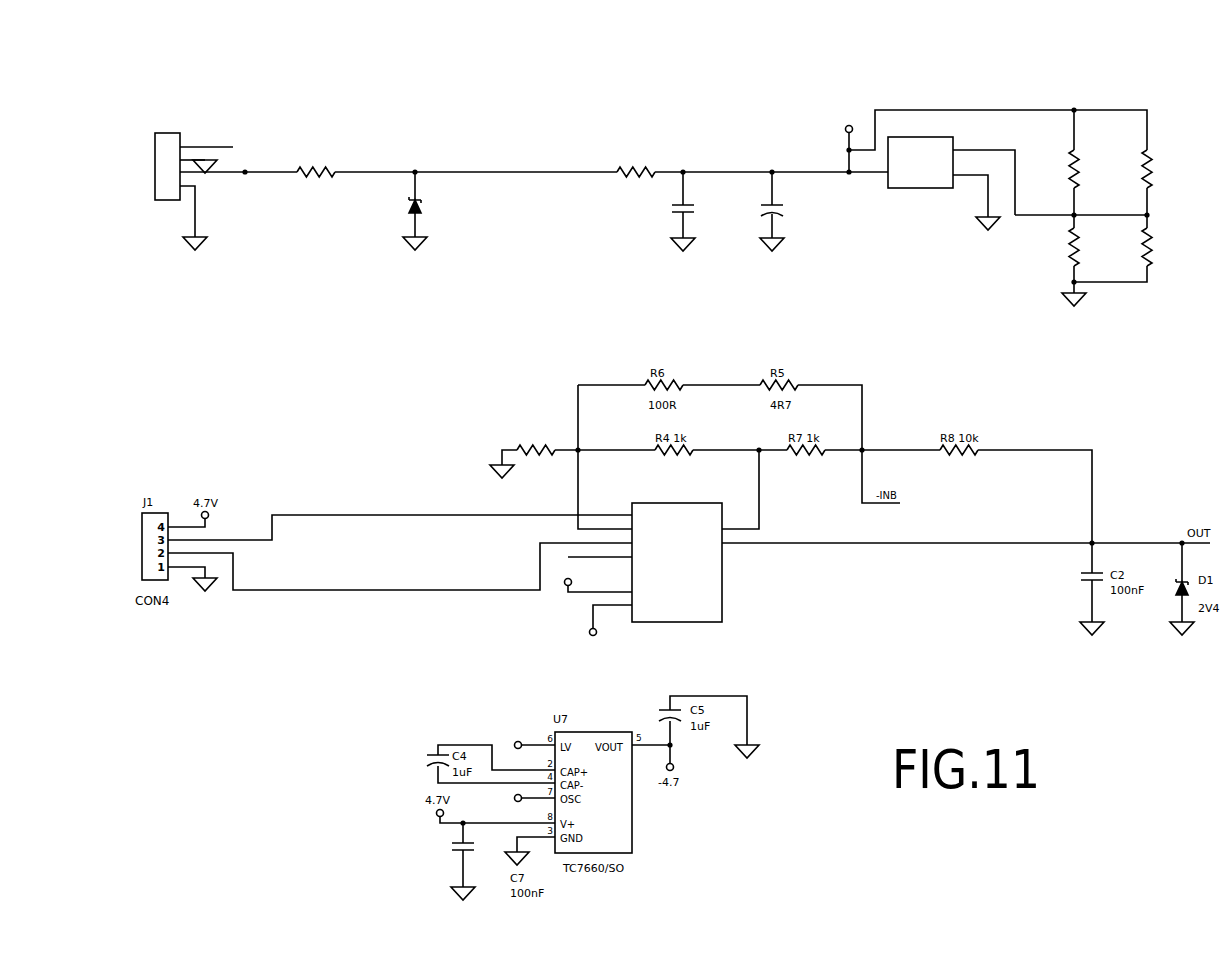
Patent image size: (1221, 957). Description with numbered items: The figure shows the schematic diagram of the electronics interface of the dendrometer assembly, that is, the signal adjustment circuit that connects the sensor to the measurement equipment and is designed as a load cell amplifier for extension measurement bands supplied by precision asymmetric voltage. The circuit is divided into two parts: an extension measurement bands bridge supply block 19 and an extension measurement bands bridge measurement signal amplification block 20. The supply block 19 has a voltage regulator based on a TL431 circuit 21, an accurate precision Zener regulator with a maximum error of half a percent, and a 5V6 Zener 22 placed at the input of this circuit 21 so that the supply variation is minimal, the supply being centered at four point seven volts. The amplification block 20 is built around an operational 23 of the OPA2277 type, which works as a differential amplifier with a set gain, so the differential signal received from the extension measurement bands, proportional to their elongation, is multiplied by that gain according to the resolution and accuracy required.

The extension measurement bands bridge supply block 19 is at (727, 146).
The extension measurement bands bridge measurement signal amplification block 20 is at (465, 458).
The TL431 circuit 21 is at (915, 155).
The 5V6 Zener 22 is at (408, 210).
The operational 23 is at (705, 593).